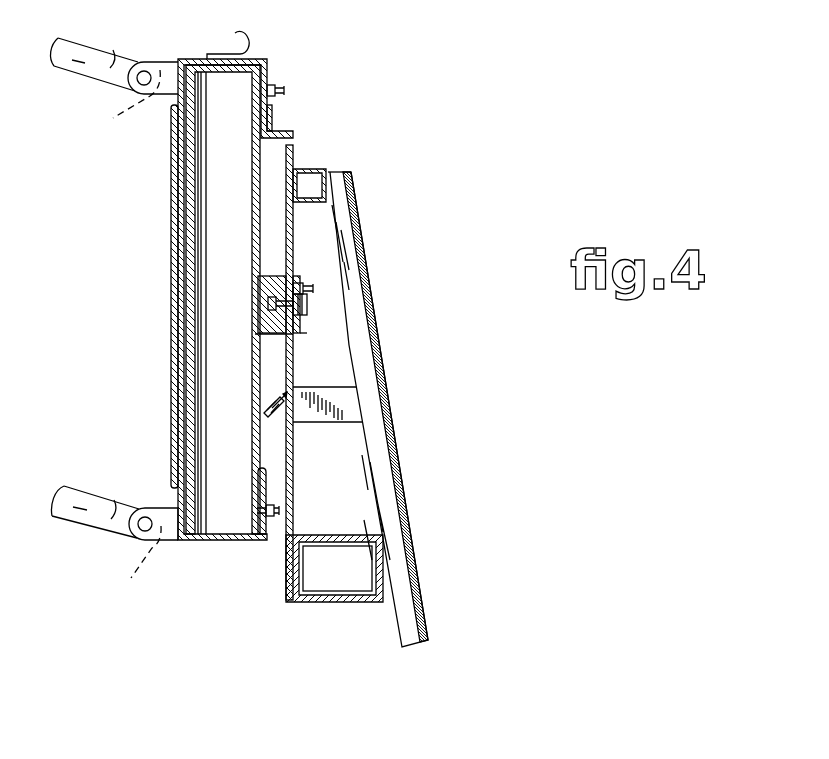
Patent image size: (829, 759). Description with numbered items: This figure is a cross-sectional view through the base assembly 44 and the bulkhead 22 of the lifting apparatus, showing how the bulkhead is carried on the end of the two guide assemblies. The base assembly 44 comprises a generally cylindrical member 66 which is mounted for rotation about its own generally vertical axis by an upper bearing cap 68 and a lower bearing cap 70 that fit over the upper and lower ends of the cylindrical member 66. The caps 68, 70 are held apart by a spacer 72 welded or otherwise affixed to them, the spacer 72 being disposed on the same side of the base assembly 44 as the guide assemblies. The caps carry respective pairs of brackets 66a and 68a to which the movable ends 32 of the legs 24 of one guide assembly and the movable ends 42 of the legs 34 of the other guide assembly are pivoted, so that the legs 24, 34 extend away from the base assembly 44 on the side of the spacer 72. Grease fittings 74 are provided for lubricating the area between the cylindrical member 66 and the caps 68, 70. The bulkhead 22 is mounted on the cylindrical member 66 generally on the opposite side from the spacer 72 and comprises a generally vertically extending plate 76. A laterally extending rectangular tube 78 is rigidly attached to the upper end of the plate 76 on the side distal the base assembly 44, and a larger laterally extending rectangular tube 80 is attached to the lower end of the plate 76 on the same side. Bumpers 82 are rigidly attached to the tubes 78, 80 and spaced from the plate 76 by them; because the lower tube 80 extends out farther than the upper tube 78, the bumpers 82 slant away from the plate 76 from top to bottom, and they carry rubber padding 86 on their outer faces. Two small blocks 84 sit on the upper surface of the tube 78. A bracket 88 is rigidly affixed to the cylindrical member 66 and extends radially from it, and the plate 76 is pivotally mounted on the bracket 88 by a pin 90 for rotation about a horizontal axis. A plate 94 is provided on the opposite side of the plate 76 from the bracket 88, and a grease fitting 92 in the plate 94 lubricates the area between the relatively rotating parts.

The bulkhead 22 is at (383, 252).
The diverging legs 24 is at (108, 48).
The opposite ends of legs 32 is at (121, 100).
The diverging legs 34 is at (81, 487).
The ends of legs 42 is at (141, 564).
The base assembly 44 is at (162, 296).
The cylindrical member 66 is at (262, 404).
The brackets 66a is at (176, 541).
The bearing cap 68 is at (173, 108).
The brackets 68a is at (160, 66).
The bearing cap 70 is at (268, 541).
The spacer 72 is at (170, 397).
The grease fittings 74 is at (284, 88).
The plate 76 is at (294, 496).
The rectangular tube 78 is at (320, 180).
The rectangular tube 80 is at (350, 603).
The bumpers 82 is at (380, 492).
The small blocks 84 is at (293, 152).
The rubber padding 86 is at (393, 437).
The bracket 88 is at (266, 278).
The pin 90 is at (300, 316).
The grease fitting 92 is at (305, 283).
The plate 94 is at (300, 336).